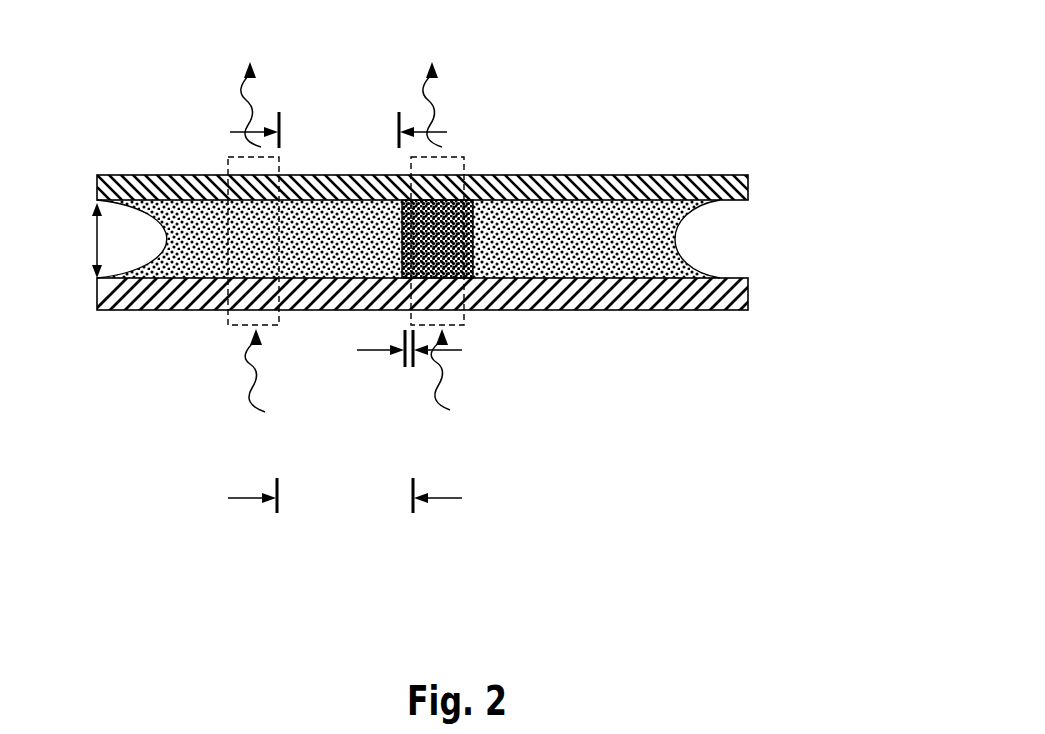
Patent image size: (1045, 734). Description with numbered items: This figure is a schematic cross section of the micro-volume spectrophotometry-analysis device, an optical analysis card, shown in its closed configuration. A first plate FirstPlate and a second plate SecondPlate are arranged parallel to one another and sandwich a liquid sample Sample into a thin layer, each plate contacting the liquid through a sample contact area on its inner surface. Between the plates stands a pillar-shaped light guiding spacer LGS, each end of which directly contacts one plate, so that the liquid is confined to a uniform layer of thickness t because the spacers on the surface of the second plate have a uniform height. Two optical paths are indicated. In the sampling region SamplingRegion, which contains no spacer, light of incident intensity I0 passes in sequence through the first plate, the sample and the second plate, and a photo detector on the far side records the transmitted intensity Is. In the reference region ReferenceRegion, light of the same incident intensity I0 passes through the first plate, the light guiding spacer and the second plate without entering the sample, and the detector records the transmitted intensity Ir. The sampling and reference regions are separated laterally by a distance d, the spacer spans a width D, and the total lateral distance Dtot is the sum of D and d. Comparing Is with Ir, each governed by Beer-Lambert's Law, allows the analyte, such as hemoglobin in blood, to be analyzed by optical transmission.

The first plate FirstPlate is at (749, 189).
The second plate SecondPlate is at (749, 290).
The sample Sample is at (668, 238).
The light guiding spacer LGS is at (447, 263).
The thickness of the sample layer t is at (82, 240).
The sampling region SamplingRegion is at (227, 168).
The reference region ReferenceRegion is at (465, 165).
The transmitted light intensity in the sampling region Is is at (251, 81).
The transmitted light intensity in the reference region Ir is at (432, 81).
The incident light intensity I0 is at (353, 399).
The distance between sampling and reference regions d is at (338, 131).
The width of the light guiding spacer D is at (409, 368).
The total distance Dtot is at (425, 499).